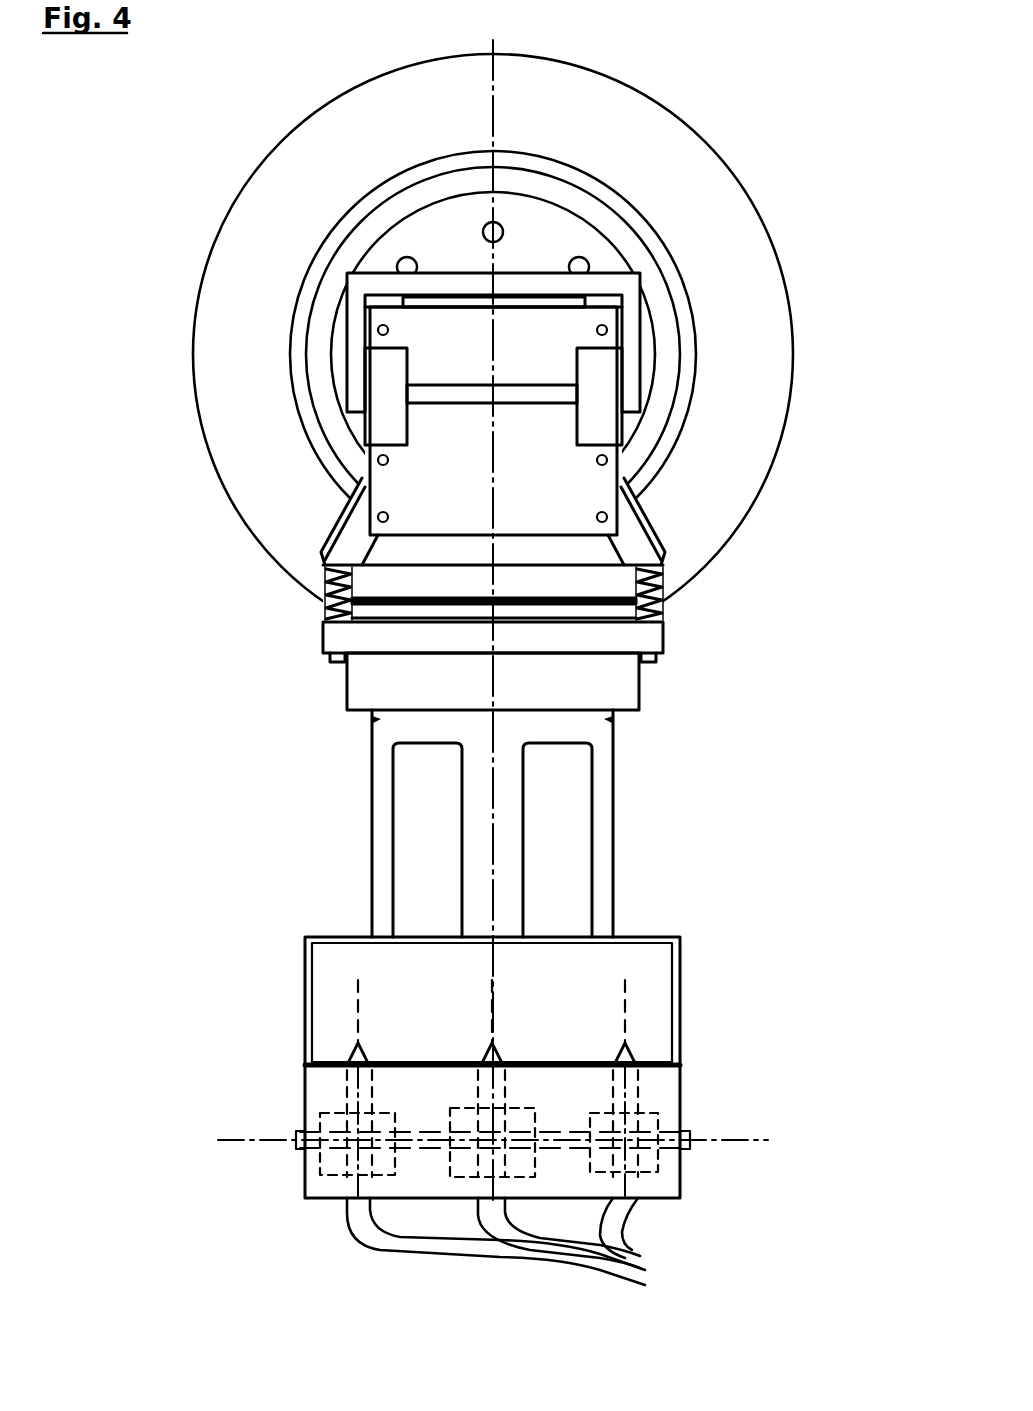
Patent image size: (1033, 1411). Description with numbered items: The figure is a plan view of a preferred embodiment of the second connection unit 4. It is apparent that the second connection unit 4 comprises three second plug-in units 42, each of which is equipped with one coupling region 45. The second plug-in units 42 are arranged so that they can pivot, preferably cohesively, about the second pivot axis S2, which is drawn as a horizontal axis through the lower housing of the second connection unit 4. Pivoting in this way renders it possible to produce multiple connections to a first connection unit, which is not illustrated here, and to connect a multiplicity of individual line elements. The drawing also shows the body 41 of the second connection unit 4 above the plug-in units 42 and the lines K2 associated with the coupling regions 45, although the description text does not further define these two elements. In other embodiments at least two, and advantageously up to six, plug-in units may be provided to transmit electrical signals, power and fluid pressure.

The second connection unit 4 is at (723, 708).
The carrier body 41 is at (630, 937).
The second plug-in unit 42 is at (400, 1180).
The coupling region 45 is at (342, 1083).
The contact line K2 is at (360, 993).
The second pivot axis S2 is at (745, 1140).